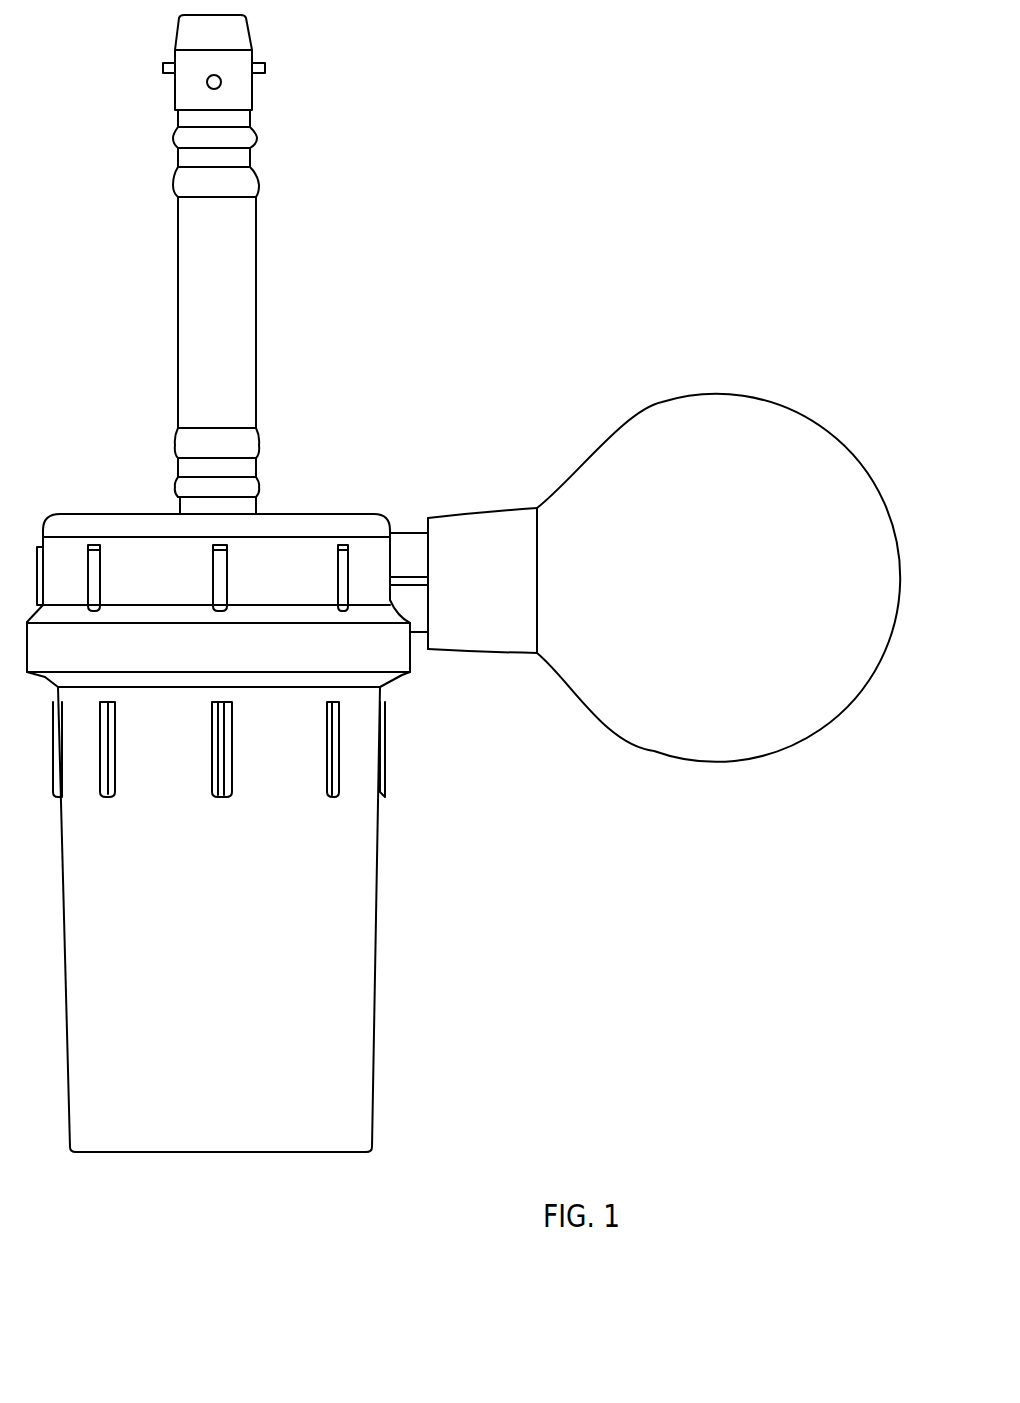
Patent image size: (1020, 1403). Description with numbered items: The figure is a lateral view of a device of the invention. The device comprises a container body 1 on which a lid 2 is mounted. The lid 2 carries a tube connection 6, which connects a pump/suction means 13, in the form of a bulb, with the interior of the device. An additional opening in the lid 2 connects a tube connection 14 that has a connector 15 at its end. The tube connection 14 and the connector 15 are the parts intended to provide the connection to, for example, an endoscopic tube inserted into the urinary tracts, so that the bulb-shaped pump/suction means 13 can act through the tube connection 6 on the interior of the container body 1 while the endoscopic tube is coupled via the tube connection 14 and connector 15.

The container body 1 is at (302, 995).
The lid 2 is at (277, 650).
The tube connection 6 is at (410, 560).
The pump/suction means 13 is at (622, 480).
The tube connection 14 is at (218, 308).
The connector 15 is at (232, 88).